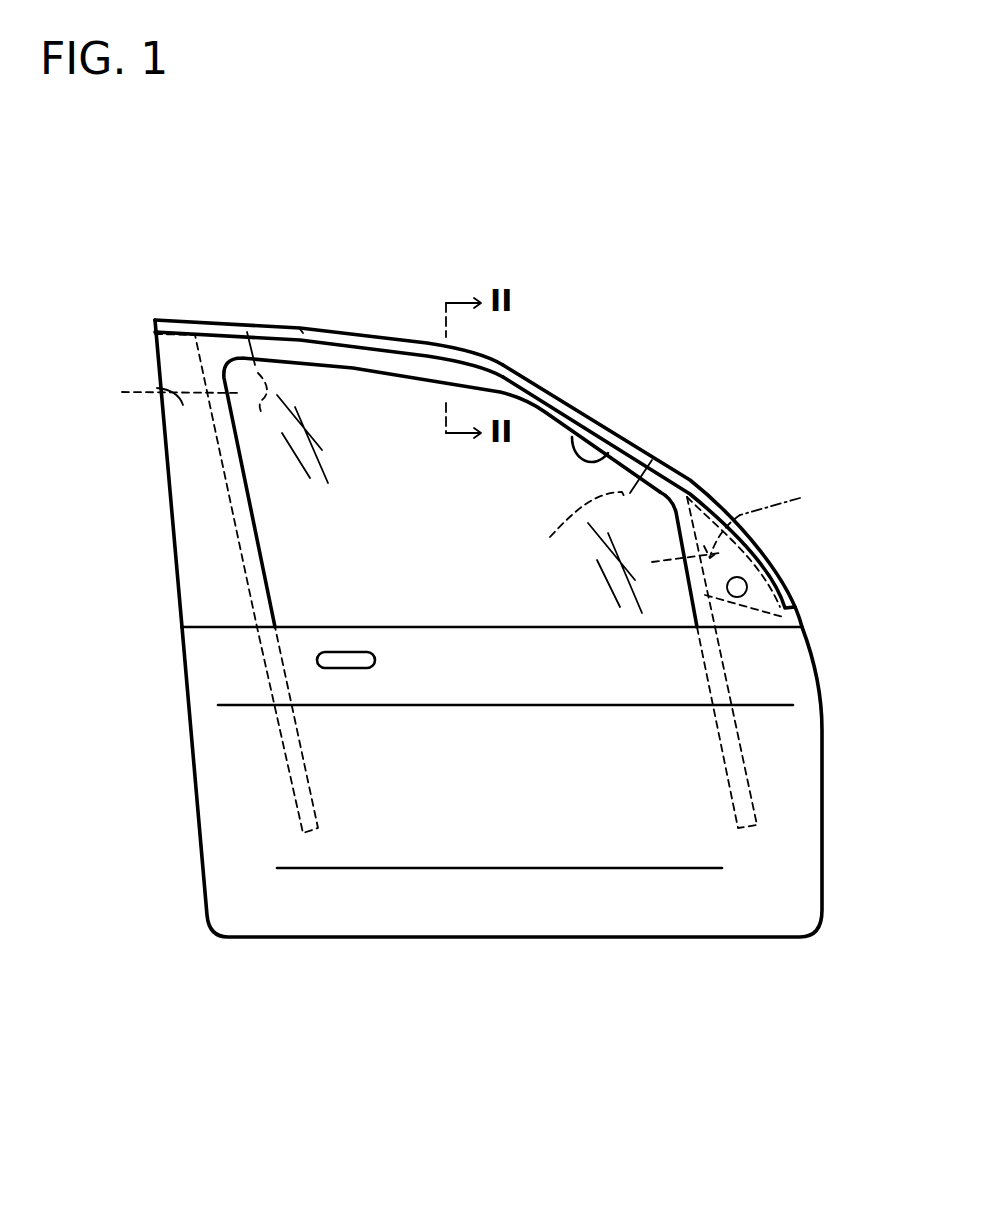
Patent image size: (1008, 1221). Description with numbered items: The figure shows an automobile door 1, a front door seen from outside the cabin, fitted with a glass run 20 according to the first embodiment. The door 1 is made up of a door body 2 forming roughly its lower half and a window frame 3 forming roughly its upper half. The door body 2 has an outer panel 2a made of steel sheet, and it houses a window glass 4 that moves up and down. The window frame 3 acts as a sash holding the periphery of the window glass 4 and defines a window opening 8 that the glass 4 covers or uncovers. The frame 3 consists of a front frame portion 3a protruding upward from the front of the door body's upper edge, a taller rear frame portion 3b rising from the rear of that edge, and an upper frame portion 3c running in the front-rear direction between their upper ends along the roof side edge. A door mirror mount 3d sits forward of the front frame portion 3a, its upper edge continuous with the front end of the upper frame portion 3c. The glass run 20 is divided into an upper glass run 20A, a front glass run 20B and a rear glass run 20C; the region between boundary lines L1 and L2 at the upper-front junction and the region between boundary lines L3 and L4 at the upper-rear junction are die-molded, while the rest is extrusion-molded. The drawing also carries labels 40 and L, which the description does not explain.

The automobile door 1 is at (143, 683).
The door body 2 is at (194, 852).
The outer panel 2a is at (508, 913).
The window frame 3 is at (153, 444).
The front frame portion 3a is at (687, 540).
The rear frame portion 3b is at (190, 508).
The upper frame portion 3c is at (570, 392).
The door mirror mount 3d is at (735, 560).
The window glass 4 is at (350, 405).
The window opening 8 is at (622, 502).
The glass run 20 is at (431, 334).
The upper glass run 20A is at (522, 385).
The front glass run 20B is at (797, 618).
The rear glass run 20C is at (242, 552).
The weather strip 40 is at (303, 329).
The direction L is at (562, 283).
The boundary line L1 is at (574, 552).
The boundary line L2 is at (771, 517).
The boundary line L3 is at (285, 407).
The boundary line L4 is at (158, 394).